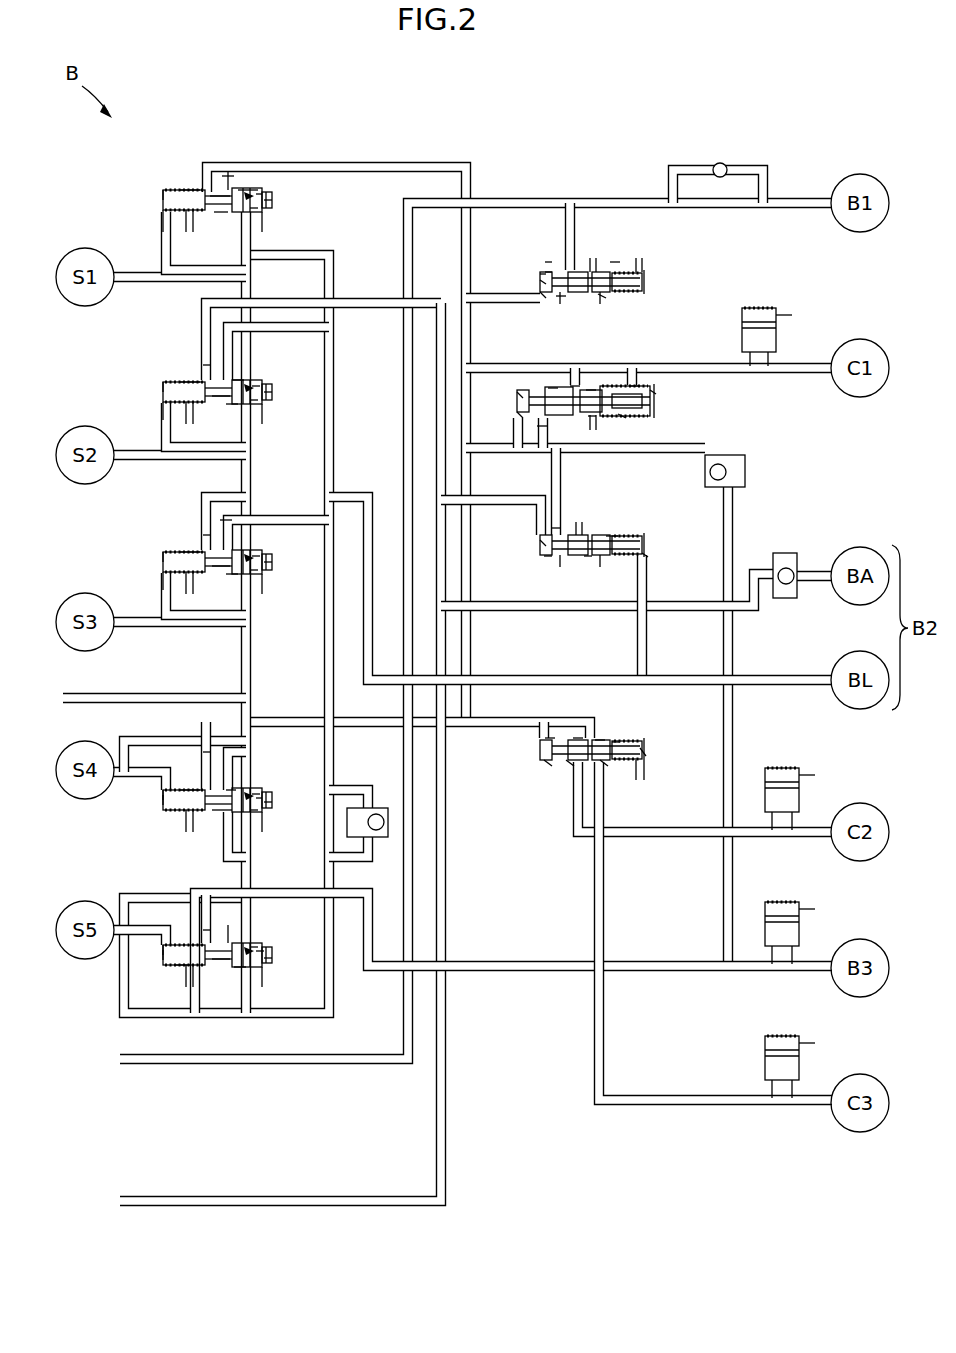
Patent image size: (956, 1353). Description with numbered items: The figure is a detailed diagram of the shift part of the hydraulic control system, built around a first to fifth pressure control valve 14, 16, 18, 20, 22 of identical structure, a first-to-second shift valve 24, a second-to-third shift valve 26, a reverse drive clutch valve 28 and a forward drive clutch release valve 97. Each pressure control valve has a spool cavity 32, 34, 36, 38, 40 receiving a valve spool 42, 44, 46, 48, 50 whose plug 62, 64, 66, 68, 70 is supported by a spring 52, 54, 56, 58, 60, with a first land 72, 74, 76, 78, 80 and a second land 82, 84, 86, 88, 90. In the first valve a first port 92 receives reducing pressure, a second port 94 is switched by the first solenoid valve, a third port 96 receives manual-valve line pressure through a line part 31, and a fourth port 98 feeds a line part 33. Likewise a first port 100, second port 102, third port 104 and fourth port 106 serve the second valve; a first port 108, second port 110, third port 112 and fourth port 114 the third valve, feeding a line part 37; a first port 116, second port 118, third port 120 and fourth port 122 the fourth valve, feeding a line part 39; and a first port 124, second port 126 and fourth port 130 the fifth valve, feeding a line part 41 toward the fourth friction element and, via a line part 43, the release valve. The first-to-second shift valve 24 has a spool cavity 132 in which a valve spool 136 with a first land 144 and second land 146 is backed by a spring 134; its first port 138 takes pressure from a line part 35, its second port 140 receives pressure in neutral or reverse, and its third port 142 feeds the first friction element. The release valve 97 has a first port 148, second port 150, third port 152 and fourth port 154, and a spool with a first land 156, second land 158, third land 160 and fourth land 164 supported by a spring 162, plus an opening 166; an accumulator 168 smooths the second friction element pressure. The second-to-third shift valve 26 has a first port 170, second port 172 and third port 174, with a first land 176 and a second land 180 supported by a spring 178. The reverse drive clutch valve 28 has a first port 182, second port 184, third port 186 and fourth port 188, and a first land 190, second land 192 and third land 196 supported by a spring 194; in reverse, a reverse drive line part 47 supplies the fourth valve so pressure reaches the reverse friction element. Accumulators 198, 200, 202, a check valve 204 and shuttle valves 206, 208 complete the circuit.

The first pressure control valve 14 is at (152, 200).
The second pressure control valve 16 is at (152, 388).
The third pressure control valve 18 is at (152, 562).
The fourth pressure control valve 20 is at (152, 810).
The fifth pressure control valve 22 is at (152, 963).
The first-to-second shift valve 24 is at (685, 282).
The second-to-third shift valve 26 is at (662, 545).
The reverse drive clutch valve 28 is at (525, 752).
The forward drive clutch release valve 97 is at (682, 412).
The line part 31 is at (336, 1000).
The line part 33 is at (357, 162).
The line part 35 is at (365, 298).
The line part 37 is at (354, 496).
The line part 39 is at (368, 790).
The line part 41 is at (524, 974).
The line part 43 is at (290, 1066).
The reverse drive line part 47 is at (445, 1100).
The spool cavity 32 is at (226, 190).
The spool cavity 34 is at (228, 404).
The spool cavity 36 is at (228, 574).
The spool cavity 38 is at (222, 816).
The spool cavity 40 is at (222, 972).
The valve spool 42 is at (262, 196).
The valve spool 44 is at (258, 386).
The valve spool 46 is at (258, 556).
The valve spool 48 is at (258, 794).
The valve spool 50 is at (255, 948).
The spring 52 is at (172, 188).
The spring 54 is at (168, 382).
The spring 56 is at (168, 552).
The spring 58 is at (163, 800).
The spring 60 is at (165, 955).
The plug 62 is at (193, 188).
The plug 64 is at (190, 382).
The plug 66 is at (190, 552).
The plug 68 is at (190, 790).
The plug 70 is at (183, 968).
The first land 72 is at (252, 188).
The first land 74 is at (232, 416).
The first land 76 is at (232, 586).
The first land 78 is at (230, 790).
The first land 80 is at (240, 970).
The second land 82 is at (273, 202).
The second land 84 is at (273, 392).
The second land 86 is at (273, 562).
The second land 88 is at (273, 802).
The second land 90 is at (273, 958).
The first port 92 is at (258, 209).
The second port 94 is at (160, 212).
The third port 96 is at (222, 215).
The fourth port 98 is at (222, 186).
The first port 100 is at (258, 402).
The second port 102 is at (163, 404).
The third port 104 is at (238, 382).
The fourth port 106 is at (203, 372).
The first port 108 is at (258, 572).
The second port 110 is at (163, 574).
The third port 112 is at (224, 516).
The fourth port 114 is at (203, 542).
The first port 116 is at (262, 798).
The second port 118 is at (165, 788).
The third port 120 is at (258, 812).
The fourth port 122 is at (203, 752).
The first port 124 is at (263, 950).
The second port 126 is at (165, 943).
The fourth port 130 is at (205, 935).
The spool cavity 132 is at (564, 300).
The spring 134 is at (615, 264).
The valve spool 136 is at (540, 283).
The first port 138 is at (540, 296).
The second port 140 is at (548, 272).
The third port 142 is at (548, 262).
The first land 144 is at (540, 276).
The second land 146 is at (603, 296).
The first port 148 is at (574, 384).
The second port 150 is at (590, 388).
The third port 152 is at (520, 417).
The fourth port 154 is at (541, 430).
The first land 156 is at (553, 388).
The second land 158 is at (592, 420).
The third land 160 is at (518, 396).
The spring 162 is at (655, 392).
The fourth land 164 is at (622, 418).
The opening 166 is at (634, 386).
The accumulator 168 is at (722, 330).
The first port 170 is at (540, 545).
The second port 172 is at (545, 533).
The third port 174 is at (648, 556).
The first land 176 is at (548, 558).
The spring 178 is at (612, 535).
The second land 180 is at (588, 558).
The first port 182 is at (548, 765).
The second port 184 is at (570, 765).
The third port 186 is at (600, 740).
The fourth port 188 is at (605, 765).
The first land 190 is at (550, 738).
The second land 192 is at (578, 738).
The spring 194 is at (645, 752).
The third land 196 is at (616, 744).
The accumulator 198 is at (786, 758).
The accumulator 200 is at (786, 892).
The accumulator 202 is at (786, 1028).
The check valve 204 is at (720, 163).
The shuttle valve 206 is at (768, 470).
The shuttle valve 208 is at (786, 544).